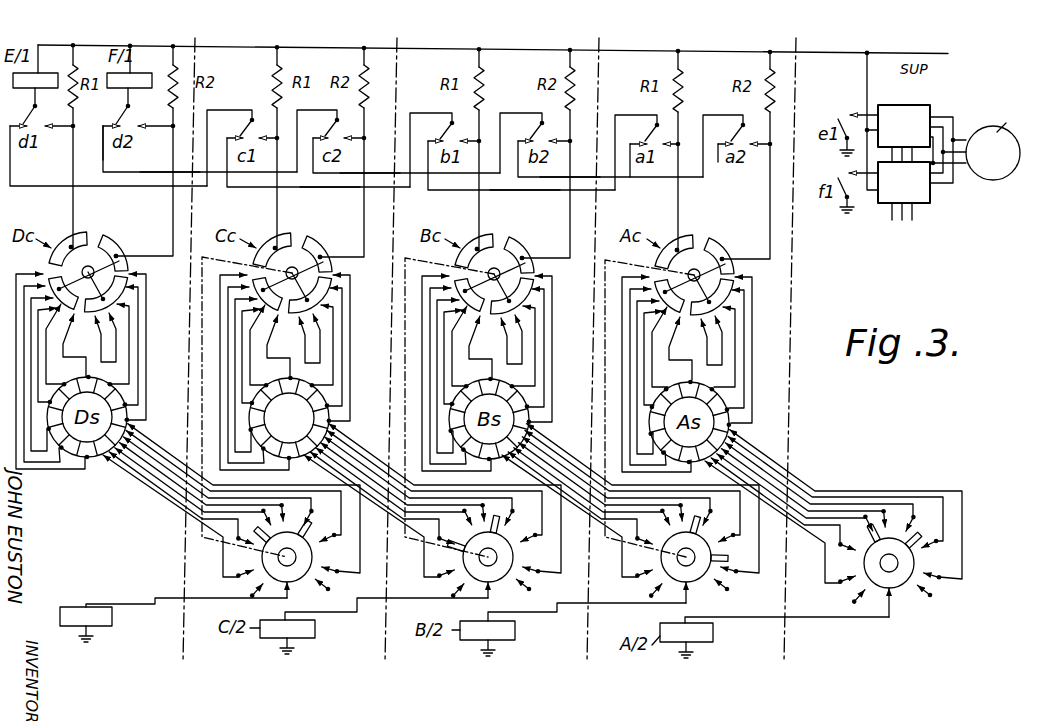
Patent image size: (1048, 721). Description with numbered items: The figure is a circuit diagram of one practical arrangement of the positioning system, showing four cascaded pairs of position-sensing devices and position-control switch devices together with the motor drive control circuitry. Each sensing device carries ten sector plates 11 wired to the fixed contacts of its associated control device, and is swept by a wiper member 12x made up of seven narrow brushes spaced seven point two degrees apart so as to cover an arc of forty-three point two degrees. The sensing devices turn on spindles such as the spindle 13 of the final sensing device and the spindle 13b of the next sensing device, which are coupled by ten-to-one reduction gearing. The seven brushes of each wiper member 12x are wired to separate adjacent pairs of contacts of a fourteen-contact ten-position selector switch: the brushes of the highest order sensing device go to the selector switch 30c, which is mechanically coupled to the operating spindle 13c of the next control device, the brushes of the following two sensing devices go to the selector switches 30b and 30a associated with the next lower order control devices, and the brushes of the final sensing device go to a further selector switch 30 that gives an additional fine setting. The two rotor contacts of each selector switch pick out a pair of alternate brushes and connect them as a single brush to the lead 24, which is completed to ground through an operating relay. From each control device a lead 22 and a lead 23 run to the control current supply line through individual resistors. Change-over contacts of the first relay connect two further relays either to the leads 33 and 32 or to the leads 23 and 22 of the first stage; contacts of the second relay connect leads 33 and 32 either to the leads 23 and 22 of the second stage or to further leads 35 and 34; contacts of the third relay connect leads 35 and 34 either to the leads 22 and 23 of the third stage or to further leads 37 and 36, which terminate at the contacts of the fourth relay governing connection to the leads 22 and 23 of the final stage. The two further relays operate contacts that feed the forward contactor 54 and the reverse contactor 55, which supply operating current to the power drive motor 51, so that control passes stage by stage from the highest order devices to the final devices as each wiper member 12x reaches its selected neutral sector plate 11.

The sector plates 11 is at (318, 406).
The wiper member 12x is at (369, 451).
The spindle 13 is at (599, 541).
The spindle of sensing unit Bs 13b is at (402, 541).
The operating spindle of position-control switch device Cc 13c is at (200, 537).
The lead 22 is at (363, 222).
The lead 23 is at (275, 207).
The lead 24 is at (159, 598).
The multi-point selector switch 30 is at (908, 583).
The multi-point selector switch 30a is at (703, 578).
The multi-point selector switch 30b is at (506, 577).
The selector switch 30c is at (305, 577).
The lead 32 is at (164, 171).
The lead 33 is at (126, 190).
The lead 34 is at (373, 177).
The lead 35 is at (320, 187).
The lead 36 is at (581, 175).
The lead 37 is at (512, 191).
The motor 51 is at (990, 178).
The forward or clockwise-run contactor 54 is at (931, 112).
The reverse or anti-clockwise run contactor 55 is at (931, 204).